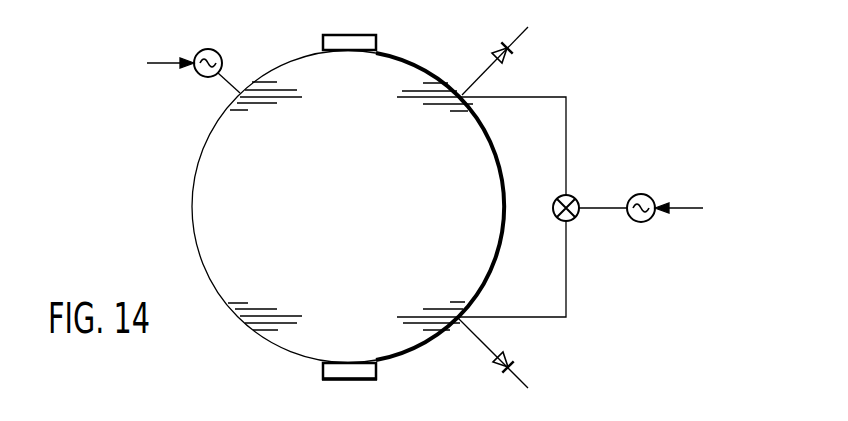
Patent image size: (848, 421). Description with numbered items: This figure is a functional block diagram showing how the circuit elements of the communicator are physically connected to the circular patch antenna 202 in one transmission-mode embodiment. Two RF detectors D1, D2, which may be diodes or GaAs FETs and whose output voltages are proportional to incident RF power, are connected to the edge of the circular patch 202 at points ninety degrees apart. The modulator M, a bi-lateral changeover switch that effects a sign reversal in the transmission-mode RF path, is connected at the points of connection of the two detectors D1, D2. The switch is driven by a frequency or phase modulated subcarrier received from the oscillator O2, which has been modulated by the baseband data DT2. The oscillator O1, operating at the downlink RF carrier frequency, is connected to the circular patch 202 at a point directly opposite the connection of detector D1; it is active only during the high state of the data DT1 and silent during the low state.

The circular patch antenna 202 is at (363, 200).
The modulator M is at (557, 218).
The oscillator O1 is at (218, 61).
The oscillator O2 is at (617, 193).
The RF detector D1 is at (493, 358).
The RF detector D2 is at (495, 61).
The data DT1 is at (151, 64).
The baseband data DT2 is at (699, 209).